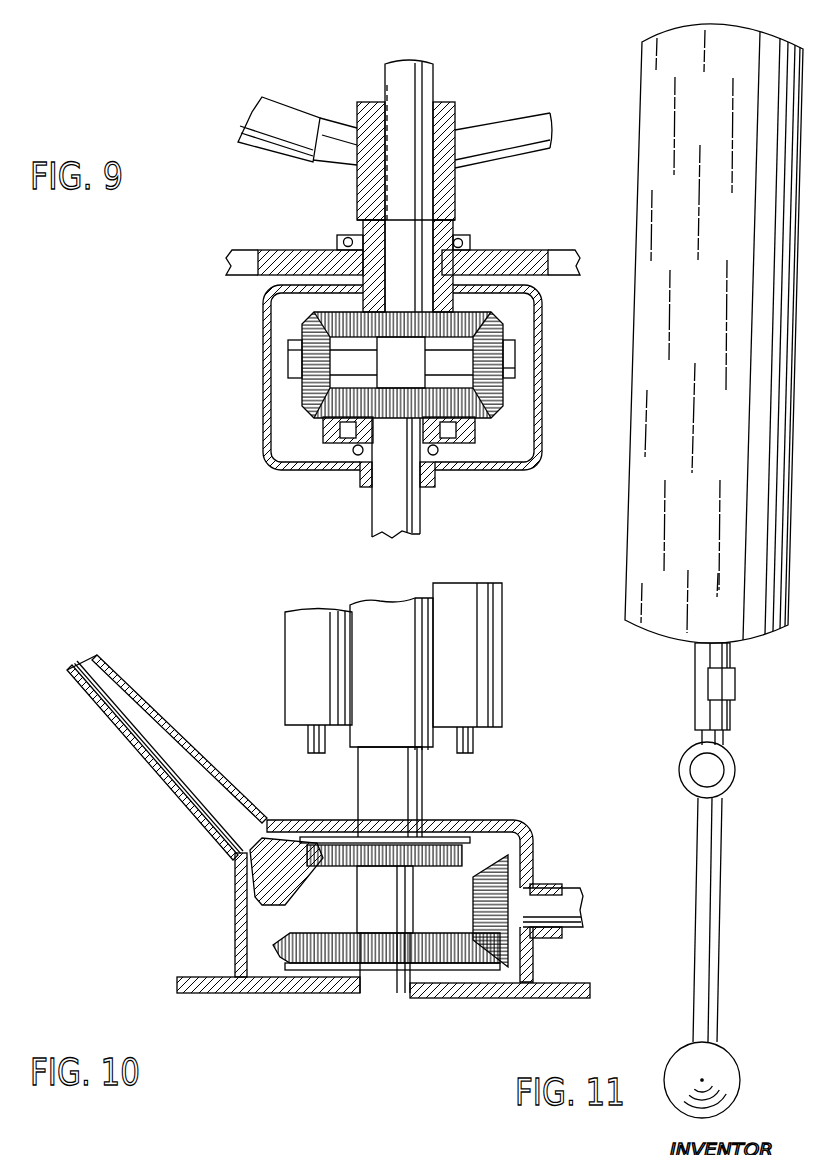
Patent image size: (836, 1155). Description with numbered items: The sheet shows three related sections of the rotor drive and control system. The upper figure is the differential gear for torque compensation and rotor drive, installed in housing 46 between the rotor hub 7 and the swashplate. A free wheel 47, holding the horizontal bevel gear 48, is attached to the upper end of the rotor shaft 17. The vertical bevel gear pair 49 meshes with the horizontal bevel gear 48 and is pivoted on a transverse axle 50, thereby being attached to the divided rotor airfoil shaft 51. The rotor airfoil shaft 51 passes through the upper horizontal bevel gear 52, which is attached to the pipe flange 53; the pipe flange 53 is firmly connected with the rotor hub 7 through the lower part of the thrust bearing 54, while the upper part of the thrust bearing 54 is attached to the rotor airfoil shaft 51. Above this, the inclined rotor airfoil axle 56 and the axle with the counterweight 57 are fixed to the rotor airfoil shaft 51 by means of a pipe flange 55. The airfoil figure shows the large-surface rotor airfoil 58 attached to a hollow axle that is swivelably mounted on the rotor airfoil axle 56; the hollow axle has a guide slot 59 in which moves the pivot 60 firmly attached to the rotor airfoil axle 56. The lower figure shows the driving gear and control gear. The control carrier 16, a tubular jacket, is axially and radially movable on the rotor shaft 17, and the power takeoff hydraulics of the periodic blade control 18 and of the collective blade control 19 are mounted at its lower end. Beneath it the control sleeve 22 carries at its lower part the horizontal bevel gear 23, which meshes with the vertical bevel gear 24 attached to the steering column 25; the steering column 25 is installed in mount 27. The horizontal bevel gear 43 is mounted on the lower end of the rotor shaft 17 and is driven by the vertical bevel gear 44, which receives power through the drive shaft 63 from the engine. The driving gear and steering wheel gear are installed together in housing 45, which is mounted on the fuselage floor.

In FIG. 9, the rotor shaft hub 7 is at (285, 252).
In FIG. 10, the control carrier 16 is at (400, 667).
In FIG. 9, the rotor shaft 17 is at (387, 505).
In FIG. 10, the rotor shaft 17 is at (378, 905).
In FIG. 10, the power takeoff hydraulics of the periodic blade control 18 is at (305, 635).
In FIG. 10, the power takeoff hydraulics of the collective blade control 19 is at (468, 604).
In FIG. 10, the control sleeve 22 is at (395, 781).
In FIG. 10, the horizontal bevel gear 23 is at (377, 850).
In FIG. 10, the vertical bevel gear 24 is at (258, 888).
In FIG. 10, the steering column 25 is at (215, 798).
In FIG. 10, the mount 27 is at (190, 737).
In FIG. 10, the horizontal bevel gear 43 is at (445, 960).
In FIG. 10, the vertical bevel gear 44 is at (497, 877).
In FIG. 10, the housing 45 is at (283, 995).
In FIG. 9, the housing 46 is at (507, 470).
In FIG. 9, the free wheel 47 is at (457, 432).
In FIG. 9, the horizontal bevel gear 48 is at (353, 405).
In FIG. 9, the vertical bevel gear pair 49 is at (327, 343).
In FIG. 9, the transverse axle 50 is at (352, 360).
In FIG. 9, the rotor airfoil shaft 51 is at (410, 90).
In FIG. 9, the upper horizontal bevel gear 52 is at (357, 313).
In FIG. 9, the pipe flange 53 is at (447, 270).
In FIG. 9, the thrust bearing 54 is at (466, 233).
In FIG. 9, the pipe flange 55 is at (358, 116).
In FIG. 11, the pipe flange 55 is at (727, 771).
In FIG. 9, the rotor airfoil axle 56 is at (347, 147).
In FIG. 11, the rotor airfoil axle 56 is at (710, 736).
In FIG. 11, the axle with counterweight 57 is at (715, 1068).
In FIG. 11, the large-surface rotor airfoil 58 is at (674, 77).
In FIG. 11, the guide slot 59 is at (715, 688).
In FIG. 11, the pivot 60 is at (727, 677).
In FIG. 10, the drive shaft 63 is at (565, 905).